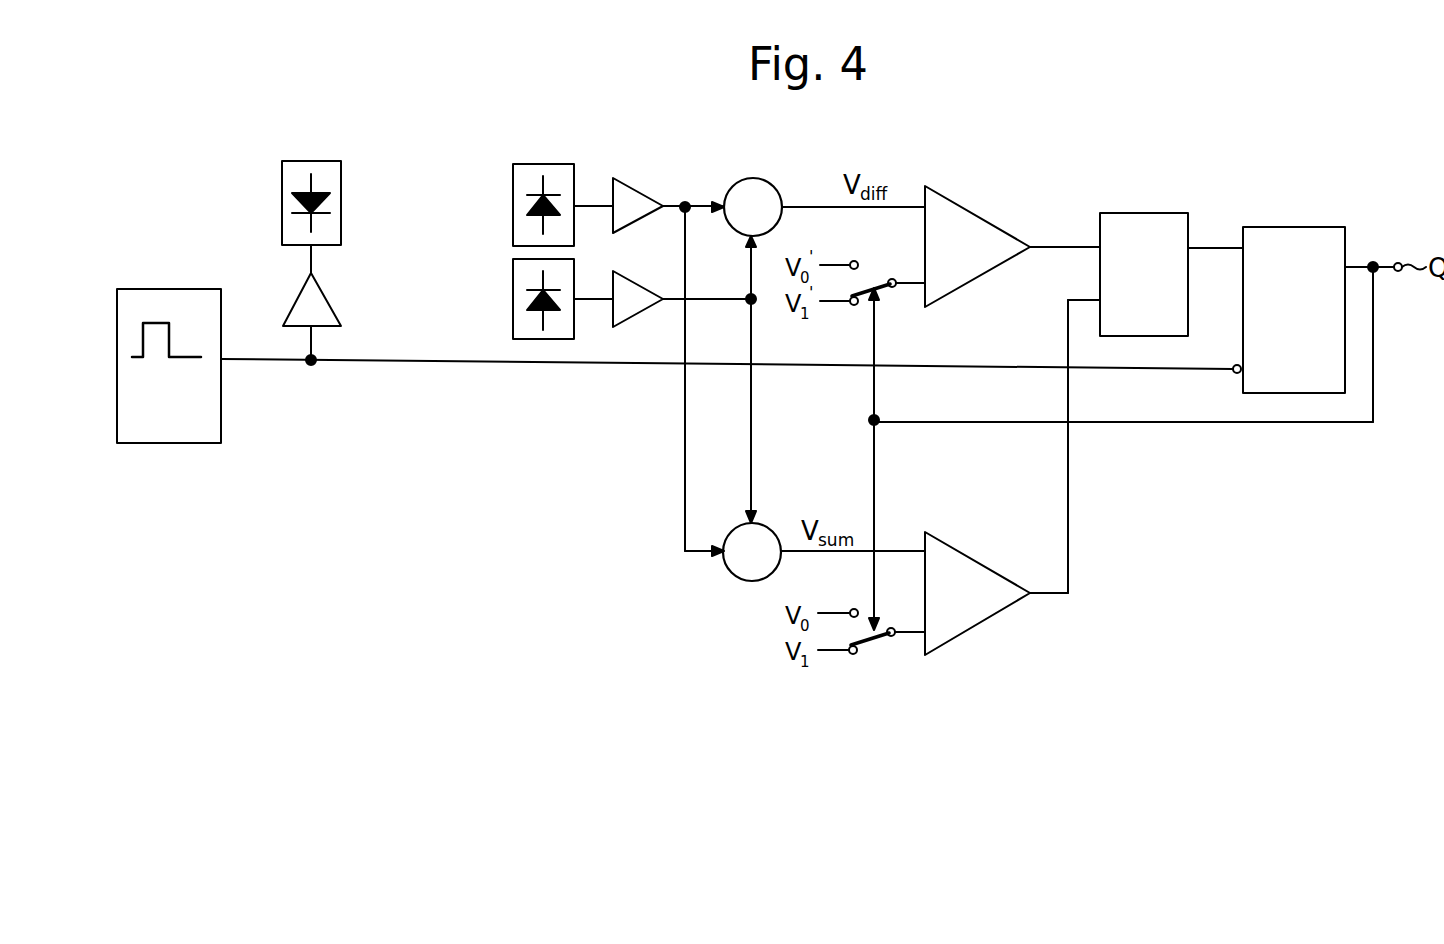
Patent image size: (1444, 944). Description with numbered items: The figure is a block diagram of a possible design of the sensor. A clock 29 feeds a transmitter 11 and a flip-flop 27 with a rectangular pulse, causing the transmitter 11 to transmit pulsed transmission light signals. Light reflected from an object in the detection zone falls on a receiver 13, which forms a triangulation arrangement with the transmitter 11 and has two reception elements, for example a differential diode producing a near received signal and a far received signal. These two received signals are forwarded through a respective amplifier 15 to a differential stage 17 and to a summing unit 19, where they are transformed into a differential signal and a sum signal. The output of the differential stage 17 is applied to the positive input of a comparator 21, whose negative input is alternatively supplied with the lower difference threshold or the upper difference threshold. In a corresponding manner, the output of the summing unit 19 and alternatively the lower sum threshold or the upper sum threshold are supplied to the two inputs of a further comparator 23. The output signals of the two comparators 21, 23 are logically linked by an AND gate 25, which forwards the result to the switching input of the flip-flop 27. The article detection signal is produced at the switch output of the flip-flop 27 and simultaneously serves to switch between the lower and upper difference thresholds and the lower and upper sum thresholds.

The transmitter 11 is at (296, 175).
The receiver 13 is at (526, 175).
The amplifier 15 is at (631, 290).
The differential stage 17 is at (758, 193).
The summing unit 19 is at (746, 567).
The comparator 21 is at (975, 233).
The further comparator 23 is at (970, 608).
The AND gate 25 is at (1144, 232).
The flip-flop 27 is at (1297, 242).
The clock 29 is at (157, 300).